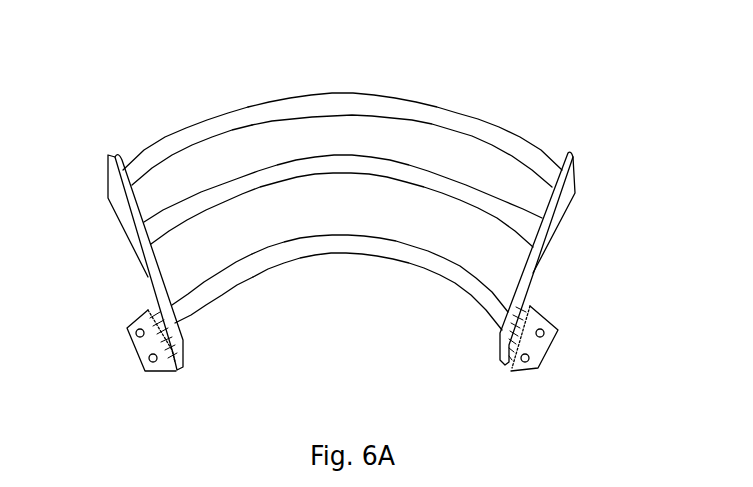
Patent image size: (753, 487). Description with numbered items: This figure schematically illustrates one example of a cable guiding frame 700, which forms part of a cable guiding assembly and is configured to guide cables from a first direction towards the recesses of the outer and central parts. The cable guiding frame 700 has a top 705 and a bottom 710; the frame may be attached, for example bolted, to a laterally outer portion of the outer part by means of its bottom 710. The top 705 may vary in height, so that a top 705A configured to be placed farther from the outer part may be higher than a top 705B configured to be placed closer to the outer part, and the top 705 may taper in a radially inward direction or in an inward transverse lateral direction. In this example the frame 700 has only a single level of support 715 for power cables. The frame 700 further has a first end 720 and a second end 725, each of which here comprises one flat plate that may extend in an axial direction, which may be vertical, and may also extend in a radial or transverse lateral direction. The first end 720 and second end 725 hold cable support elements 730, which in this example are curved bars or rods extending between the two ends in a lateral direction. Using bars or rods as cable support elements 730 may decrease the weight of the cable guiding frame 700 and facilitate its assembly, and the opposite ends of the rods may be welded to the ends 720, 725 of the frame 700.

The cable guiding frame 700 is at (559, 119).
The top 705 is at (463, 97).
The top 705A is at (124, 158).
The top 705B is at (187, 327).
The bottom 710 is at (533, 348).
The level of support 715 is at (548, 215).
The first end 720 is at (542, 252).
The second end 725 is at (137, 243).
The cable support element 730 is at (245, 268).